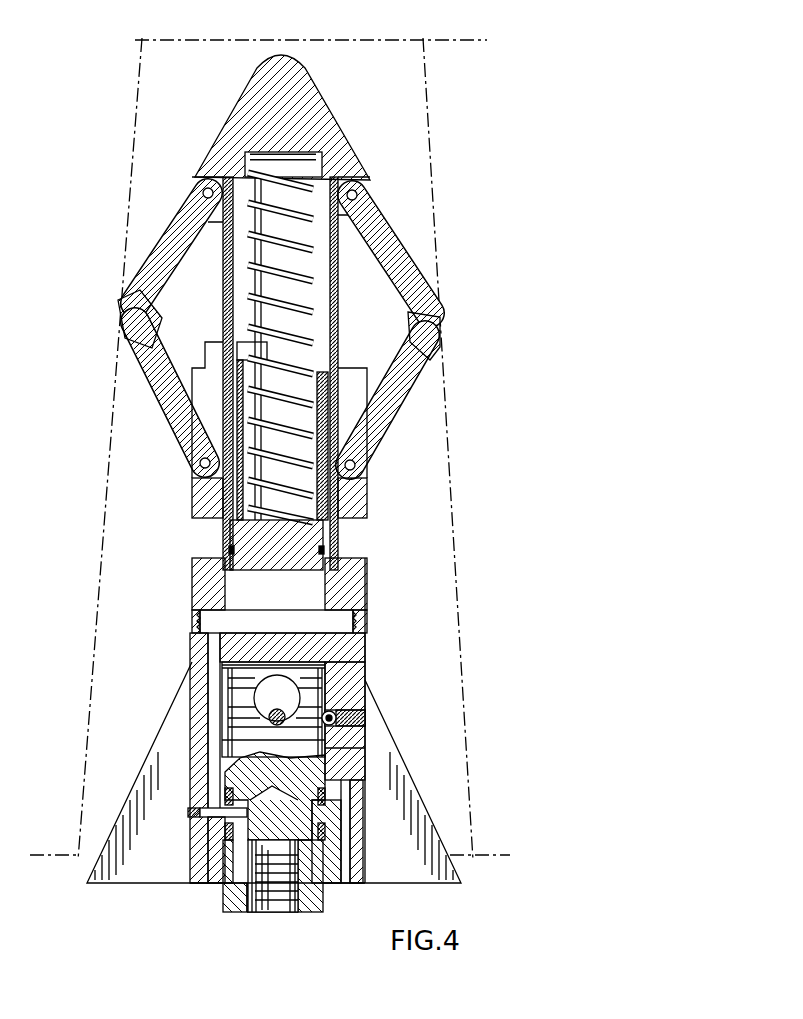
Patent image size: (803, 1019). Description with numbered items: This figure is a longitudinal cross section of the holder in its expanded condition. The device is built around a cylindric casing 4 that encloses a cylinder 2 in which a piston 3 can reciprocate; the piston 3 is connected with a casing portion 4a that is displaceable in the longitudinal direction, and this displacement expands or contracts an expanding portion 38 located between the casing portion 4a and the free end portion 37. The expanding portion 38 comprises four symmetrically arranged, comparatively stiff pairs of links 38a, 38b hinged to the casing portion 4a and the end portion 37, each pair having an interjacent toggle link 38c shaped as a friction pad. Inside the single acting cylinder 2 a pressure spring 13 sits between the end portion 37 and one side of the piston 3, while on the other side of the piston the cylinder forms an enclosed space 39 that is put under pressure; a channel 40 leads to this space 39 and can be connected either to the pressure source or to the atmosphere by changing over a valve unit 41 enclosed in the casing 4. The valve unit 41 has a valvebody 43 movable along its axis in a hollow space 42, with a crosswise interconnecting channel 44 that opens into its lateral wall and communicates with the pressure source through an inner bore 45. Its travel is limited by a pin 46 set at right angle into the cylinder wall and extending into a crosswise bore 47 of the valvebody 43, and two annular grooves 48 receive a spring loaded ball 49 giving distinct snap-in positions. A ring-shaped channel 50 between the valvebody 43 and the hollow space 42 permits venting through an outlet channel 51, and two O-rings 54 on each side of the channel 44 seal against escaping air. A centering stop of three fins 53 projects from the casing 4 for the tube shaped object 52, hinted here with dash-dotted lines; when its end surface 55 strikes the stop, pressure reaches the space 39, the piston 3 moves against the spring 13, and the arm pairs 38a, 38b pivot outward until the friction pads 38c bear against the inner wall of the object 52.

The cylinder 2 is at (333, 538).
The piston 3 is at (221, 526).
The cylindric casing 4 is at (338, 625).
The casing portion 4a is at (365, 507).
The pressure spring 13 is at (317, 217).
The free end portion 37 is at (332, 112).
The expanding portion 38 is at (309, 329).
The link 38a is at (407, 280).
The link 38b is at (408, 390).
The toggle link 38c is at (438, 318).
The enclosed space 39 is at (360, 636).
The channel 40 is at (215, 670).
The valve unit 41 is at (223, 927).
The hollow space 42 is at (365, 682).
The valvebody 43 is at (230, 890).
The interconnecting channel 44 is at (248, 812).
The inner bore 45 is at (255, 910).
The pin 46 is at (230, 713).
The bore 47 is at (253, 698).
The annular grooves 48 is at (338, 752).
The spring loaded ball 49 is at (365, 727).
The ring-shaped channel 50 is at (330, 777).
The outlet channel 51 is at (345, 827).
The movable object 52 is at (458, 577).
The fins 53 is at (225, 793).
The O-rings 54 is at (230, 818).
The end surface 55 is at (82, 853).